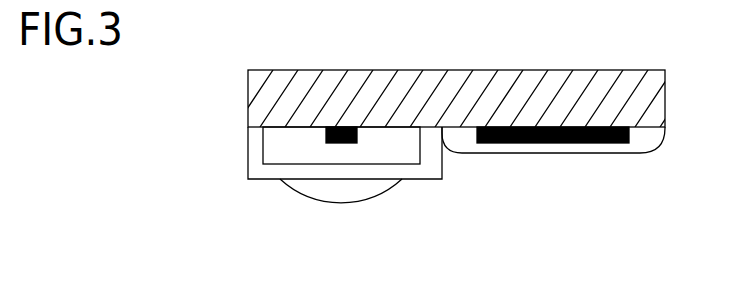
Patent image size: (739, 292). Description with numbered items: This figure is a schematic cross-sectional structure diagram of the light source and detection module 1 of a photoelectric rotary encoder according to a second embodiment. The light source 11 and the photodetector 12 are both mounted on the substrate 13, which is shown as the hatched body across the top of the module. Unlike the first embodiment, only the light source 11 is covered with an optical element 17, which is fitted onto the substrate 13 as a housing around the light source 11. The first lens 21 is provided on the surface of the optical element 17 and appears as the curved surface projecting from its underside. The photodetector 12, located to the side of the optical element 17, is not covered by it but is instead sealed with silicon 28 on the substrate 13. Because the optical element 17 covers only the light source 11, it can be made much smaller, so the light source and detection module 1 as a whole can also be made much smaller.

The light source and detection module 1 is at (247, 87).
The light source 11 is at (344, 127).
The photodetector 12 is at (632, 134).
The substrate 13 is at (540, 85).
The optical element 17 is at (253, 158).
The first lens 21 is at (336, 195).
The silicon 28 is at (540, 149).